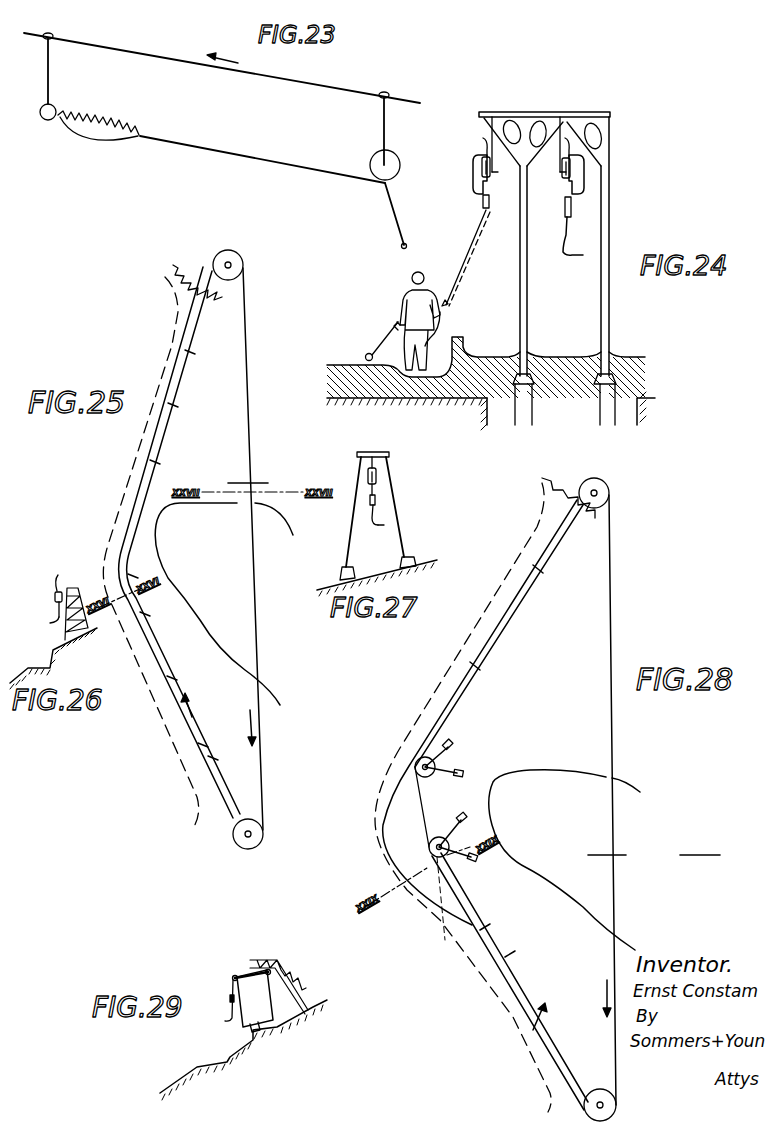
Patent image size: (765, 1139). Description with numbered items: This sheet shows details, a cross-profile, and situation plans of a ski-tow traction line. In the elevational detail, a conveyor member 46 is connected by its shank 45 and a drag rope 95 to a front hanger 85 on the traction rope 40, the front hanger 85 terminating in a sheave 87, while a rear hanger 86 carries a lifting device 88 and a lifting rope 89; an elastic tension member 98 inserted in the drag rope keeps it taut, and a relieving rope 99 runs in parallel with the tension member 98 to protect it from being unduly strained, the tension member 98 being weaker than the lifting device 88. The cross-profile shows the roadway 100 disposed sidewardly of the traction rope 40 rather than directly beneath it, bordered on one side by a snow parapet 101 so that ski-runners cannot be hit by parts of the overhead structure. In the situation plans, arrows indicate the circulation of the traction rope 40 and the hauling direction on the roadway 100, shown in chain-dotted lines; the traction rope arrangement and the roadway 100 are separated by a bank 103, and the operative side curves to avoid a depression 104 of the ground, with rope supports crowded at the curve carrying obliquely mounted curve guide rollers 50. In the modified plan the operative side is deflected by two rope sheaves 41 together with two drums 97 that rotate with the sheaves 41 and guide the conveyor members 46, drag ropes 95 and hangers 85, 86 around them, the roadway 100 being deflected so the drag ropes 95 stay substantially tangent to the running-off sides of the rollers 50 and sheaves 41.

In FIG. 23, the traction rope 40 is at (192, 62).
In FIG. 24, the traction rope 40 is at (484, 150).
In FIG. 25, the traction rope 40 is at (193, 727).
In FIG. 26, the traction rope 40 is at (57, 580).
In FIG. 28, the traction rope 40 is at (481, 933).
In FIG. 29, the traction rope 40 is at (230, 982).
In FIG. 25, the rope sheave 41 is at (244, 266).
In FIG. 28, the rope sheave 41 is at (610, 493).
In FIG. 29, the rope sheave 41 is at (248, 972).
In FIG. 23, the shank 45 is at (389, 207).
In FIG. 24, the shank 45 is at (447, 317).
In FIG. 27, the shank 45 is at (369, 513).
In FIG. 23, the conveyor member 46 is at (401, 246).
In FIG. 24, the conveyor member 46 is at (403, 321).
In FIG. 26, the conveyor member 46 is at (49, 624).
In FIG. 27, the conveyor member 46 is at (379, 526).
In FIG. 24, the curve guide roller 50 is at (489, 180).
In FIG. 26, the curve guide roller 50 is at (54, 597).
In FIG. 27, the curve guide roller 50 is at (380, 480).
In FIG. 23, the front hanger 85 is at (52, 78).
In FIG. 23, the rear hanger 86 is at (380, 126).
In FIG. 24, the rear hanger 86 is at (473, 168).
In FIG. 23, the pulley 87 is at (46, 121).
In FIG. 23, the lifting device 88 is at (371, 160).
In FIG. 24, the lifting device 88 is at (490, 210).
In FIG. 27, the lifting device 88 is at (378, 501).
In FIG. 24, the lifting rope 89 is at (468, 248).
In FIG. 23, the drag rope 95 is at (262, 157).
In FIG. 24, the drag rope 95 is at (470, 238).
In FIG. 29, the drum 97 is at (250, 1016).
In FIG. 23, the elastic tension member 98 is at (98, 118).
In FIG. 23, the relieving rope 99 is at (88, 132).
In FIG. 24, the roadway 100 is at (420, 399).
In FIG. 25, the roadway 100 is at (130, 463).
In FIG. 26, the roadway 100 is at (40, 668).
In FIG. 28, the roadway 100 is at (442, 694).
In FIG. 29, the roadway 100 is at (212, 1070).
In FIG. 24, the snow parapet 101 is at (458, 346).
In FIG. 25, the bank 103 is at (168, 402).
In FIG. 26, the bank 103 is at (58, 660).
In FIG. 27, the bank 103 is at (377, 524).
In FIG. 28, the bank 103 is at (496, 632).
In FIG. 29, the bank 103 is at (255, 1065).
In FIG. 25, the depression 104 is at (178, 591).
In FIG. 28, the depression 104 is at (530, 869).